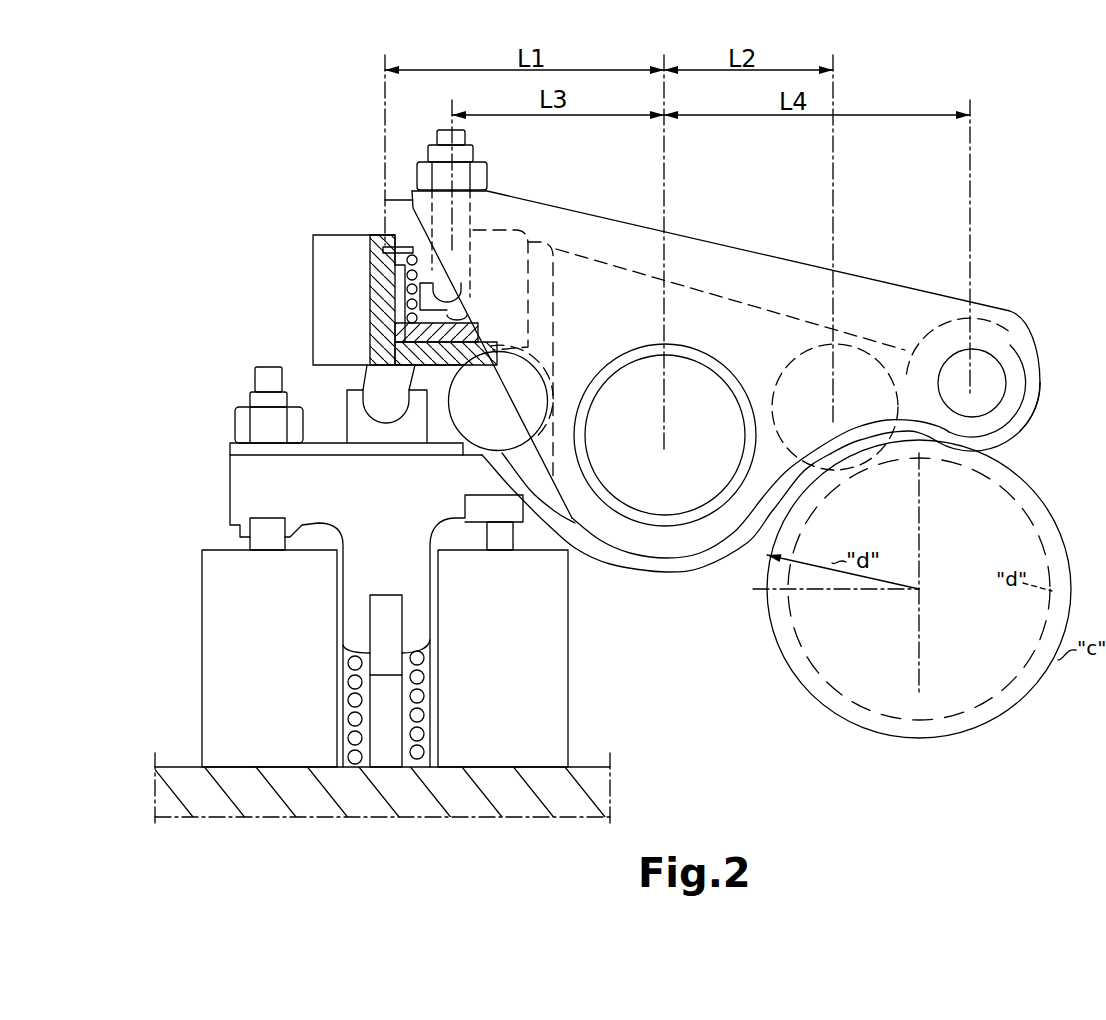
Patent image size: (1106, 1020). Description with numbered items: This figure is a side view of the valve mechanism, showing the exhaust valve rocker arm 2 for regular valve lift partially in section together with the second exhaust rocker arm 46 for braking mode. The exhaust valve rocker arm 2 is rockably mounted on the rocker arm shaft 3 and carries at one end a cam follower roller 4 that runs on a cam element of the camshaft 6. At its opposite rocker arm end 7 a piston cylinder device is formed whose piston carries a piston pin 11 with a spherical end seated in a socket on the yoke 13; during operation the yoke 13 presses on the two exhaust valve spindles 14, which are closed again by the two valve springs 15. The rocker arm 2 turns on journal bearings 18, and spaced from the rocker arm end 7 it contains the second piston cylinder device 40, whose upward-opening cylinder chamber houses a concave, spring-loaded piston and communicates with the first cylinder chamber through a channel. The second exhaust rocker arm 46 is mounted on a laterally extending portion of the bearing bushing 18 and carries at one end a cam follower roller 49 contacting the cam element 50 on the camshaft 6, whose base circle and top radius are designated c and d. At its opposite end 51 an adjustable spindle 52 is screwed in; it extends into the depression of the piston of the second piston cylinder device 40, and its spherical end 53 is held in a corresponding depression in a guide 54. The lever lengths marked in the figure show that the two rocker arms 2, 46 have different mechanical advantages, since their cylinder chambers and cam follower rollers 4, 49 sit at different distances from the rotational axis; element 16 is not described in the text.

The exhaust valve rocker arm 2 is at (727, 294).
The rocker arm shaft 3 is at (706, 376).
The cam follower roller 4 is at (818, 474).
The camshaft 6 is at (1015, 535).
The rocker arm end 7 is at (308, 243).
The piston pin 11 is at (380, 445).
The yoke 13 is at (232, 465).
The exhaust valve spindles 14 is at (278, 548).
The valve springs 15 is at (202, 648).
The compression springs 16 is at (426, 748).
The journal bearings 18 is at (676, 515).
The second piston cylinder device 40 is at (368, 311).
The second exhaust rocker arm 46 is at (1004, 302).
The cam follower roller 49 is at (1035, 412).
The cam element 50 is at (1009, 486).
The end of the second rocker arm 51 is at (385, 200).
The adjustable spindle 52 is at (466, 140).
The spherical end 53 is at (462, 290).
The guide 54 is at (468, 317).